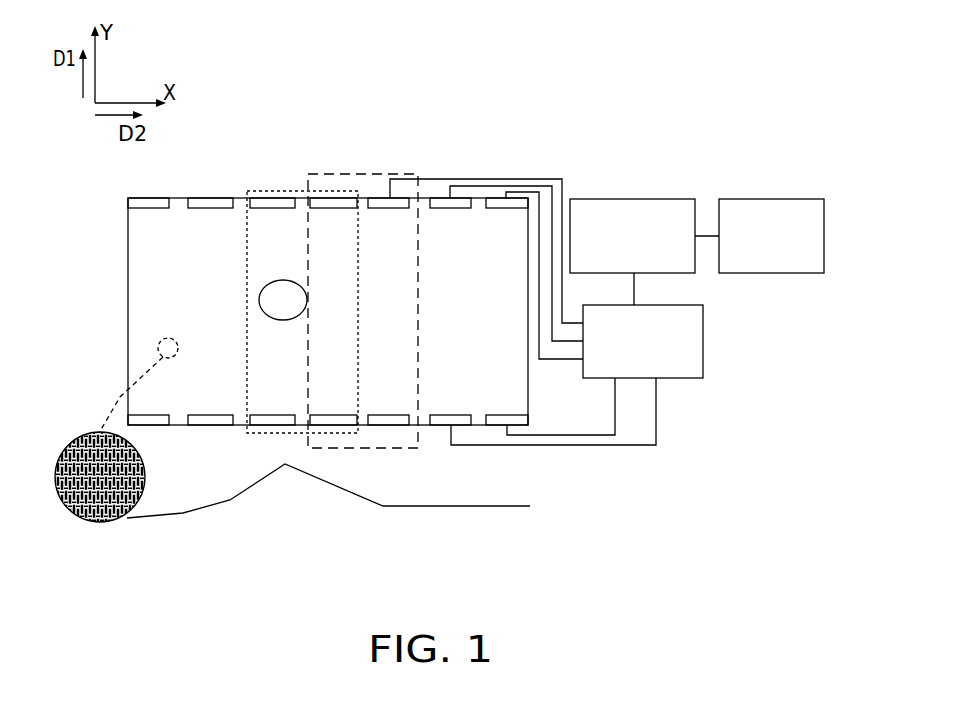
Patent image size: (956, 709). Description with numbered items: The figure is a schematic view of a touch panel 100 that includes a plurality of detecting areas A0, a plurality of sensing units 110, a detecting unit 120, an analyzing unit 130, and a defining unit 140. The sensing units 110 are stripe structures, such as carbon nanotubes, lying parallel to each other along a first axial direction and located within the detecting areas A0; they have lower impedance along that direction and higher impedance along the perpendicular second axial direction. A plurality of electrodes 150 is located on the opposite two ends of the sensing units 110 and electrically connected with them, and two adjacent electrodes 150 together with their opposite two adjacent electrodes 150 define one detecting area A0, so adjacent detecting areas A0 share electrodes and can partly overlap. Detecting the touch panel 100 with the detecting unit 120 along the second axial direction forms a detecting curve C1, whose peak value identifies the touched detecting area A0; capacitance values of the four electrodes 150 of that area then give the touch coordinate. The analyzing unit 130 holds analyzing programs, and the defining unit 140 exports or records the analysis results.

The touch panel 100 is at (477, 29).
The sensing units 110 is at (128, 242).
The detecting unit 120 is at (688, 378).
The analyzing unit 130 is at (645, 199).
The defining unit 140 is at (752, 199).
The electrodes 150 is at (268, 203).
The detecting areas A0 is at (290, 190).
The detecting curve C1 is at (512, 505).